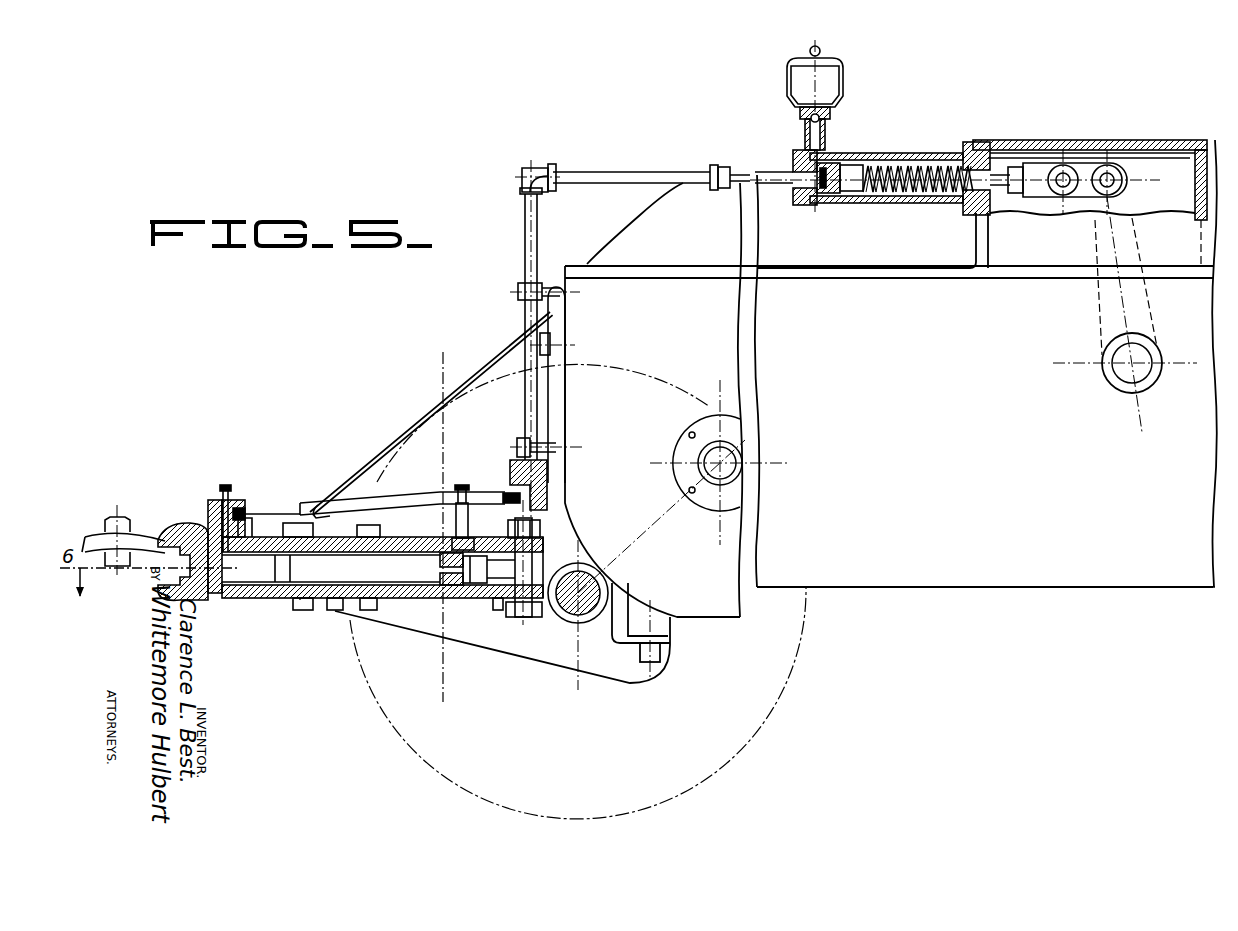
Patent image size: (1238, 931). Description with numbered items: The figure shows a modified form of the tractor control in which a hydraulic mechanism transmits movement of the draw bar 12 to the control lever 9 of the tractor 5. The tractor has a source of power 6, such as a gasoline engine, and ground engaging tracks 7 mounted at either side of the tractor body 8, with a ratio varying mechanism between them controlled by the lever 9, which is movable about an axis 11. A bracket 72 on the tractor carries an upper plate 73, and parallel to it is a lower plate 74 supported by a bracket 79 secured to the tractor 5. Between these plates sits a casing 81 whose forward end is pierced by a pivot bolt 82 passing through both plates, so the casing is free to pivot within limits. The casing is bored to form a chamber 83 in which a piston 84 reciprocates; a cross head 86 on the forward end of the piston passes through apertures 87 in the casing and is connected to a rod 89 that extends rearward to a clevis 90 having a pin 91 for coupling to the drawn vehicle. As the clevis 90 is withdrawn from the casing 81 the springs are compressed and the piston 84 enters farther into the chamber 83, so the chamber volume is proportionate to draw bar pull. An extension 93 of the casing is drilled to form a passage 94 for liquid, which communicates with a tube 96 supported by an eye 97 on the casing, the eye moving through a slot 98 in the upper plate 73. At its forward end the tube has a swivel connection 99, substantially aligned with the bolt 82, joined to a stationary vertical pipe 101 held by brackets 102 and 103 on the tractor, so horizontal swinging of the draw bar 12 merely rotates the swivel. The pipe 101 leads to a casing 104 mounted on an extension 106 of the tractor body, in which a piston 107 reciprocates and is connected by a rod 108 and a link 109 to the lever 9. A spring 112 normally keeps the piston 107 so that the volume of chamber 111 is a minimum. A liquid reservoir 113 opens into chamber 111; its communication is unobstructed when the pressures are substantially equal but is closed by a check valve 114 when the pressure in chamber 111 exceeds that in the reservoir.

The tractor 5 is at (1075, 588).
The source of power 6 is at (595, 615).
The tracks 7 is at (443, 352).
The tractor body 8 is at (1080, 453).
The lever 9 is at (1102, 322).
The axis 11 is at (1118, 372).
The draw bar 12 is at (288, 648).
The bracket 72 is at (398, 440).
The upper plate 73 is at (258, 537).
The lower plate 74 is at (262, 598).
The bracket 79 is at (563, 660).
The casing 81 is at (338, 600).
The pivot bolt 82 is at (553, 613).
The chamber 83 is at (232, 577).
The piston 84 is at (400, 578).
The cross head 86 is at (443, 582).
The apertures 87 is at (473, 585).
The rod 89 is at (157, 538).
The clevis 90 is at (192, 524).
The pin 91 is at (122, 518).
The extension 93 is at (232, 500).
The passage 94 is at (214, 500).
The tube 96 is at (330, 506).
The eye 97 is at (458, 487).
The slot 98 is at (470, 533).
The swivel connection 99 is at (510, 478).
The vertical pipe 101 is at (523, 320).
The bracket 102 is at (517, 448).
The bracket 103 is at (518, 289).
The casing 104 is at (853, 160).
The extension 106 is at (1044, 136).
The piston 107 is at (849, 193).
The rod 108 is at (935, 195).
The link 109 is at (1083, 170).
The chamber 111 is at (800, 195).
The spring 112 is at (925, 158).
The liquid reservoir 113 is at (790, 89).
The check valve 114 is at (800, 121).